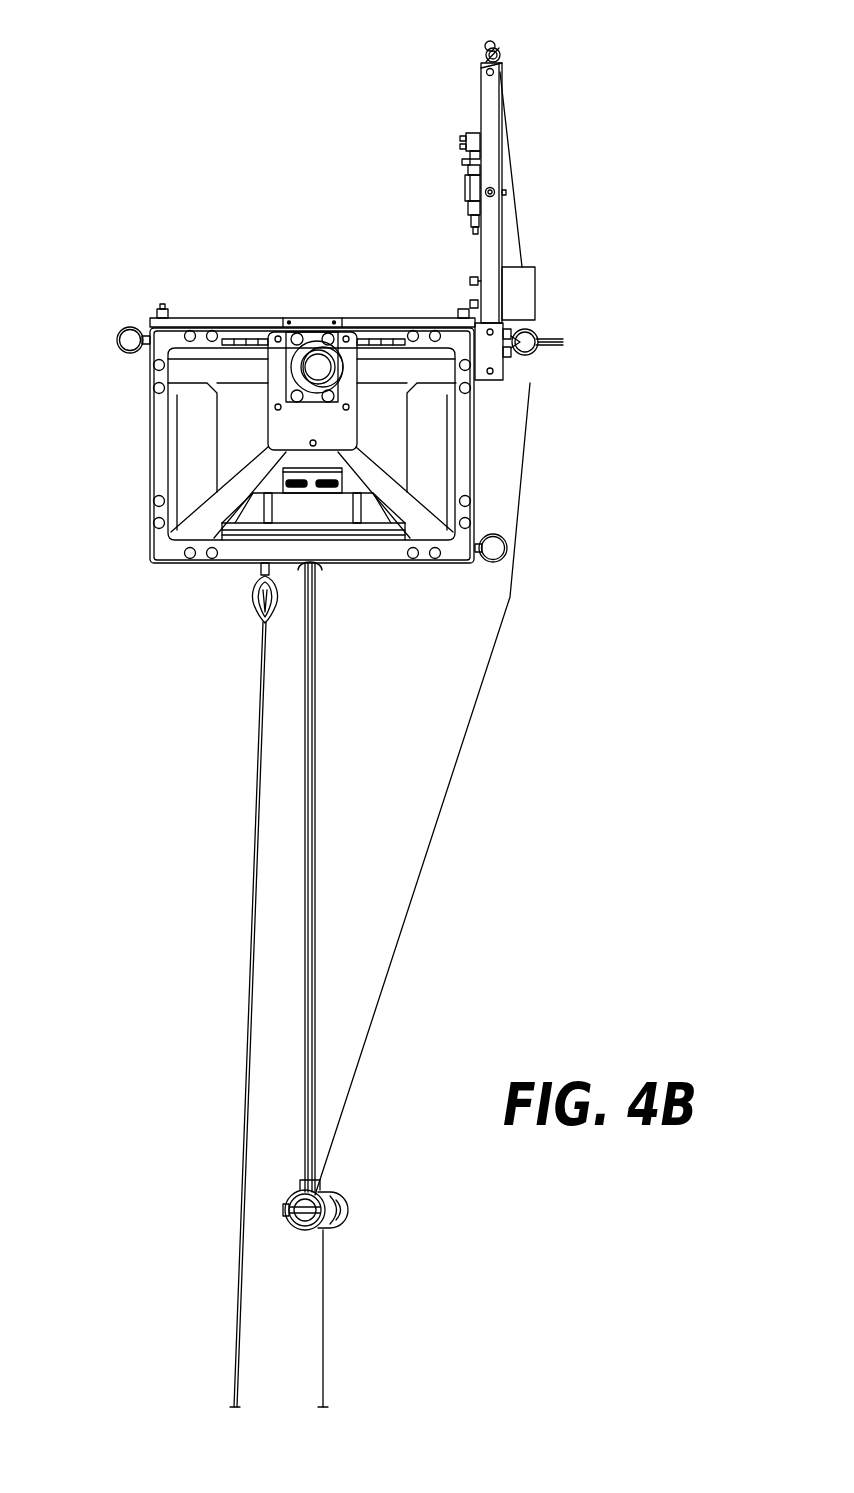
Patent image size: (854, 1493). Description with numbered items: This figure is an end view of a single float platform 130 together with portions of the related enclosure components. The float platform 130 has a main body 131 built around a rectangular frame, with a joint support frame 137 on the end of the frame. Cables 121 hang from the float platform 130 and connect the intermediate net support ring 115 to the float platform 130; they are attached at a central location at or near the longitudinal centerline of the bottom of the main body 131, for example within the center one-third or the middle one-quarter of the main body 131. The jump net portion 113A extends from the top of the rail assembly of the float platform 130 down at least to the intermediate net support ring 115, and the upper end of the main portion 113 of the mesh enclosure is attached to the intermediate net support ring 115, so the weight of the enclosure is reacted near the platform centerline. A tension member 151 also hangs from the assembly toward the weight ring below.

The float platform 130 is at (241, 306).
The main body 131 is at (148, 442).
The joint support frame 137 is at (374, 426).
The cable 121 is at (313, 683).
The jump net portion 113A is at (495, 670).
The intermediate net support ring 115 is at (333, 1195).
The main portion 113 is at (323, 1297).
The tension member 151 is at (238, 1275).